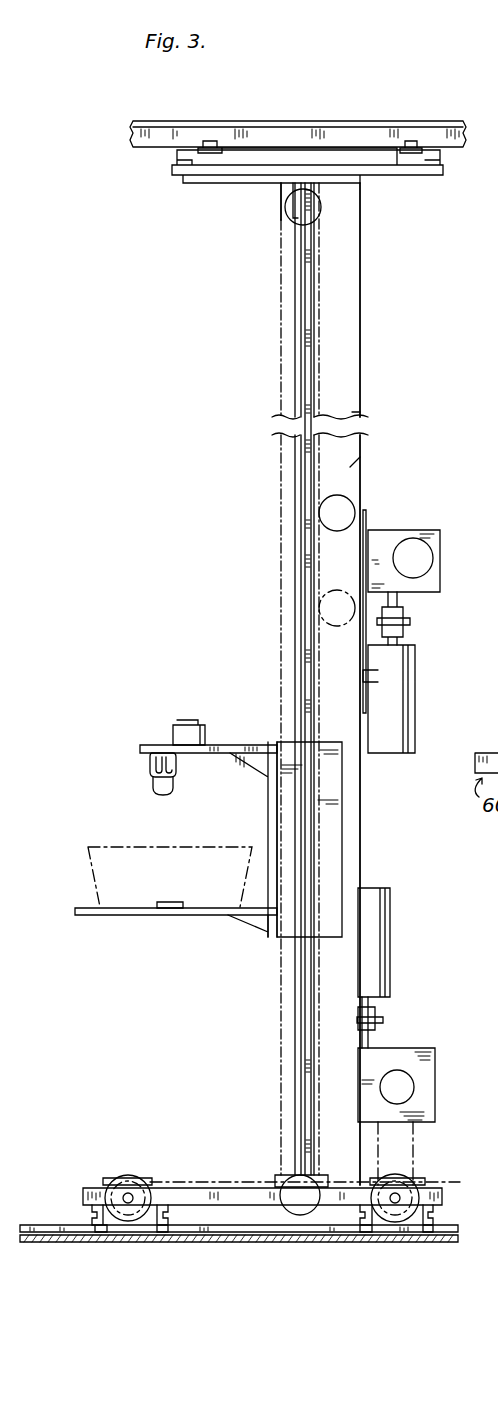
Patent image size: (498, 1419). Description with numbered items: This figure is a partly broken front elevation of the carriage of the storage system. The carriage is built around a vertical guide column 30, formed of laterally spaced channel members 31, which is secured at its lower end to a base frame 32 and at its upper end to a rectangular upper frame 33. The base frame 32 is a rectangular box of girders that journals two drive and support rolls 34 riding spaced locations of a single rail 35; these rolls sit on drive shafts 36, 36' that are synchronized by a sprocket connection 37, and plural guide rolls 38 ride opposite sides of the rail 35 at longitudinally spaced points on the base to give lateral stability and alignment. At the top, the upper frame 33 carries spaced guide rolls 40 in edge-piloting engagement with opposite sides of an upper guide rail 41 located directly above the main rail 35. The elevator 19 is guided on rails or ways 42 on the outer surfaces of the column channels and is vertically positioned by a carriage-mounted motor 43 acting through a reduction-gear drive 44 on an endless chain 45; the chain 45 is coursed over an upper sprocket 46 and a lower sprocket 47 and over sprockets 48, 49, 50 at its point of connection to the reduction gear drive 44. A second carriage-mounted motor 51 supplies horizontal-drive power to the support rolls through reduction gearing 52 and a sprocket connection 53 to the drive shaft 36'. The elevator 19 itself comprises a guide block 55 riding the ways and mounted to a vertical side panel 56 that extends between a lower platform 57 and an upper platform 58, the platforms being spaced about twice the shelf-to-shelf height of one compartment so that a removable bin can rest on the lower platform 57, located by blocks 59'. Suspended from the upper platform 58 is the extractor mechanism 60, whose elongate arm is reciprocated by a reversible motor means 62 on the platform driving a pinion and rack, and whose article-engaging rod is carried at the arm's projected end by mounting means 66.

The elevator 19 is at (239, 937).
The vertical guide column 30 is at (375, 332).
The channel members 31 is at (352, 467).
The base frame 32 is at (246, 1173).
The upper frame 33 is at (409, 182).
The drive and support roll 34 is at (157, 1195).
The rail 35 is at (33, 1226).
The drive shaft 36 is at (127, 1165).
The drive shaft 36' is at (426, 1177).
The sprocket connection 37 is at (200, 1187).
The guide rolls 38 is at (162, 1232).
The guide rolls 40 is at (210, 141).
The upper guide rail 41 is at (293, 120).
The rails or ways 42 is at (300, 407).
The motor 43 is at (408, 682).
The reduction-gear drive 44 is at (442, 540).
The endless chain 45 is at (279, 293).
The upper sprocket 46 is at (322, 207).
The lower sprocket 47 is at (288, 1215).
The sprocket 48 is at (355, 500).
The sprocket 49 is at (406, 548).
The sprocket 50 is at (330, 596).
The motor 51 is at (385, 925).
The reduction gearing 52 is at (415, 1050).
The sprocket connection 53 is at (415, 1150).
The guide block 55 is at (300, 834).
The vertical side panel 56 is at (268, 784).
The lower platform 57 is at (85, 915).
The upper platform 58 is at (152, 745).
The locating blocks 59' is at (170, 877).
The extractor mechanism 60 is at (143, 774).
The reversible motor means 62 is at (190, 720).
The mounting means 66 is at (158, 796).